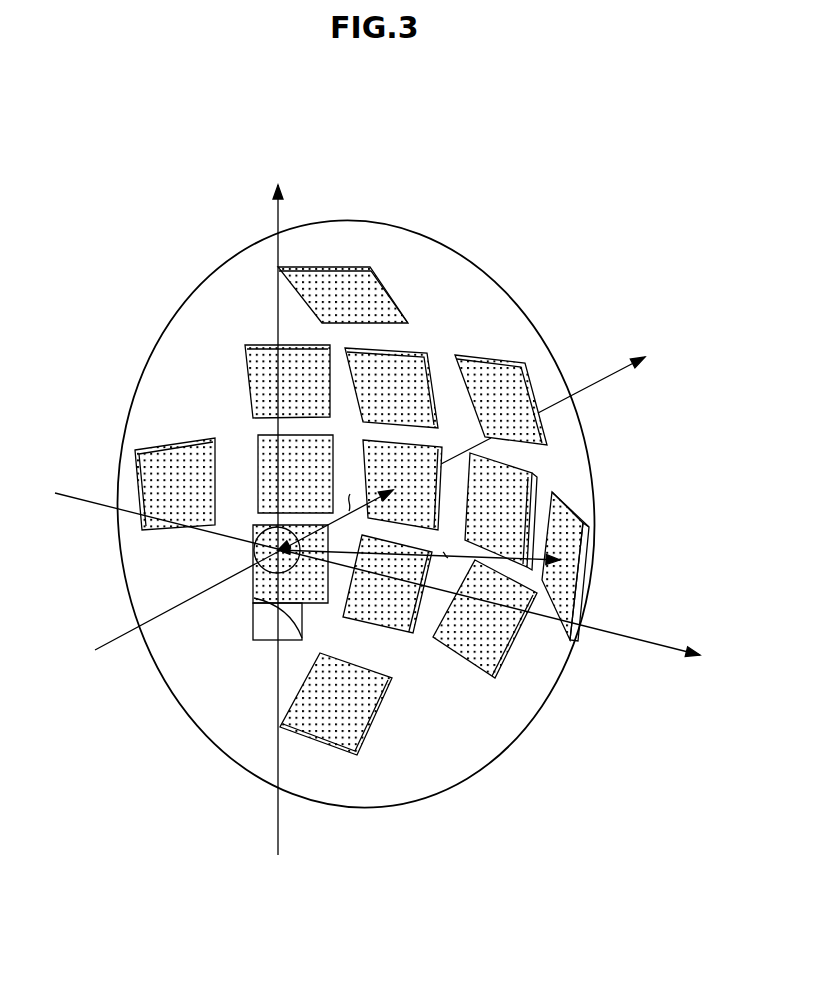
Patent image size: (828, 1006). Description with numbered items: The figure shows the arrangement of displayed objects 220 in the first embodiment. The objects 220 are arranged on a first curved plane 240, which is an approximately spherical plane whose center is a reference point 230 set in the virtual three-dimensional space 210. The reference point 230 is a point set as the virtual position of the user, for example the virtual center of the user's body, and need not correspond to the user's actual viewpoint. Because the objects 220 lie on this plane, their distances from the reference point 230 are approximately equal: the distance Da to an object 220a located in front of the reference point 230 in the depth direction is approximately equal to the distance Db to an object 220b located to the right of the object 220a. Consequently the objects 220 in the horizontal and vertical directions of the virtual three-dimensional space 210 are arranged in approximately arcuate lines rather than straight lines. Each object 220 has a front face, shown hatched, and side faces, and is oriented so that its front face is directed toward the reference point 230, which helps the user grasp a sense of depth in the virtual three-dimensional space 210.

The virtual three-dimensional space 210 is at (117, 252).
The objects 220 is at (468, 298).
The object 220a is at (443, 488).
The object 220b is at (585, 582).
The reference point 230 is at (253, 549).
The first curved plane 240 is at (528, 328).